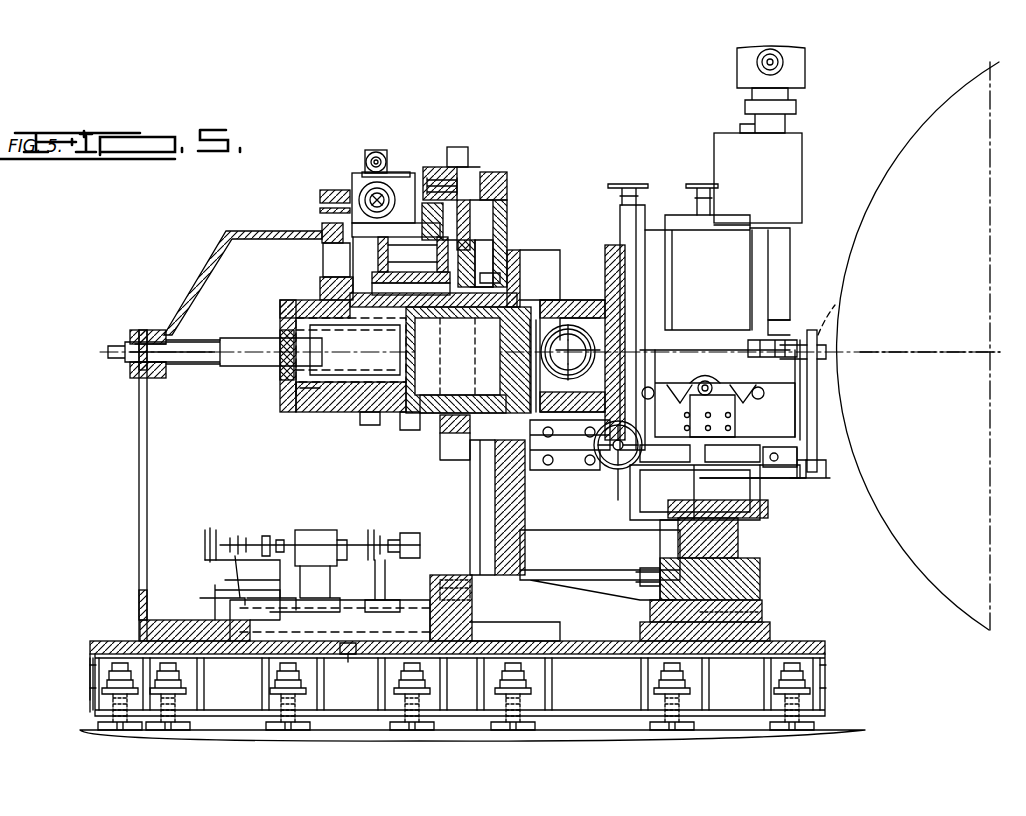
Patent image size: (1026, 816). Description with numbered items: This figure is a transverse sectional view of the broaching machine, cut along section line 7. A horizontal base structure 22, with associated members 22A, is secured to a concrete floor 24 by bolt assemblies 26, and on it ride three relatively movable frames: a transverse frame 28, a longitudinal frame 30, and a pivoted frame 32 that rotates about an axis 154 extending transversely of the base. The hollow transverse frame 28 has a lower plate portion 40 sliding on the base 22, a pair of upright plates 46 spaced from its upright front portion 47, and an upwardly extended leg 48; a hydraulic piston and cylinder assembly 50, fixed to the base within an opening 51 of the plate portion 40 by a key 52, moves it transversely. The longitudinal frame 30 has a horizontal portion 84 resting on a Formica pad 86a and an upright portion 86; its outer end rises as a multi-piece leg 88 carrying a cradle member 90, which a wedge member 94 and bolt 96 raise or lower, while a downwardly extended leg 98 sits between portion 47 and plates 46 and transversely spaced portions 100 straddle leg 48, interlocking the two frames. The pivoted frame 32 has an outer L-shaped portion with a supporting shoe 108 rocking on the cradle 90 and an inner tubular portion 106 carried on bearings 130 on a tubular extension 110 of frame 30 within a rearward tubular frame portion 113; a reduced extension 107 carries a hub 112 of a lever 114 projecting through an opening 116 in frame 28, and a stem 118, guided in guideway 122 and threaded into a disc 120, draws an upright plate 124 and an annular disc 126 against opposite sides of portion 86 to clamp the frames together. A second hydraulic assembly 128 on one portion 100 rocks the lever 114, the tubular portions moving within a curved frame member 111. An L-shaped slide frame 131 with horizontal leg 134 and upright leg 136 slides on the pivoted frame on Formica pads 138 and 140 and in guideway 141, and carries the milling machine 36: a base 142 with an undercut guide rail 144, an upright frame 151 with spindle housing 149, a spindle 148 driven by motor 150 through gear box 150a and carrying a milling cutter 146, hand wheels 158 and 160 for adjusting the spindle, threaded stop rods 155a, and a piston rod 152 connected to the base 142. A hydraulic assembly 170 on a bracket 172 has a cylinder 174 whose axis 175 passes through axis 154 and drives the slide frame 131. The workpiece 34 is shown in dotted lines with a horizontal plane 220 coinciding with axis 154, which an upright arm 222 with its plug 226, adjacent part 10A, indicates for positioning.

The section line 7- 7 is at (88, 272).
The workpiece support 10A is at (764, 488).
The horizontal base structure 22 is at (822, 672).
The frame member 22A is at (815, 455).
The concrete structure 24 is at (830, 730).
The bolt assembly 26 is at (180, 695).
The transverse frame 28 is at (132, 614).
The longitudinal frame 30 is at (512, 548).
The pivoted frame 32 is at (300, 422).
The workpiece 34 is at (912, 125).
The milling machine 36 is at (798, 270).
The lower plate portion 40 is at (160, 620).
The upright plates 46 is at (488, 628).
The upright front portion 47 is at (380, 620).
The upwardly extended leg 48 is at (450, 167).
The hydraulic piston and cylinder assembly 50 is at (284, 528).
The opening 51 is at (238, 597).
The key 52 is at (350, 663).
The horizontal portion 84 is at (575, 590).
The upright portion 86 is at (508, 222).
The Formica pad 86a is at (790, 625).
The multi-piece leg 88 is at (752, 560).
The cradle member 90 is at (730, 512).
The wedge member 94 is at (752, 590).
The bolt 96 is at (762, 604).
The downwardly extended leg 98 is at (445, 600).
The transversely spaced portions 100 is at (414, 170).
The inner tubular portion 106 is at (516, 356).
The reduced extension 107 is at (296, 418).
The supporting shoe 108 is at (740, 530).
The tubular extension 110 is at (402, 432).
The curved frame member 111 is at (446, 433).
The hub 112 is at (326, 412).
The rearwardly extended tubular frame portion 113 is at (445, 460).
The lever 114 is at (324, 282).
The opening 116 is at (296, 236).
The stem 118 is at (232, 366).
The plate or disc 120 is at (284, 380).
The guideway 122 is at (152, 330).
The upright plate 124 is at (545, 420).
The annular disc 126 is at (365, 428).
The hydraulic piston and cylinder assembly 128 is at (352, 148).
The bearings 130 is at (392, 378).
The L-shaped frame 131 is at (750, 445).
The horizontal leg 134 is at (718, 462).
The upright leg 136 is at (610, 330).
The Formica pad 138 is at (606, 252).
The L-shape Formica pad 140 is at (616, 470).
The guideway 141 is at (818, 468).
The base 142 is at (760, 398).
The upright undercut guide rail 144 is at (702, 378).
The milling cutter 146 is at (822, 330).
The spindle 148 is at (770, 340).
The spindle housing 149 is at (780, 242).
The motor 150 is at (796, 62).
The gear box 150a is at (795, 148).
The upright frame 151 is at (683, 245).
The piston rod 152 is at (672, 462).
The axis 154 is at (200, 344).
The threaded rods 155a is at (648, 450).
The hand wheel 158 is at (708, 190).
The hand wheel 160 is at (628, 184).
The hydraulic piston and cylinder assembly 170 is at (572, 320).
The upright supporting bracket 172 is at (532, 372).
The cylinder 174 is at (573, 323).
The axis 175 is at (600, 370).
The horizontal plane 220 is at (930, 350).
The upright arm 222 is at (818, 388).
The plug 226 is at (826, 348).